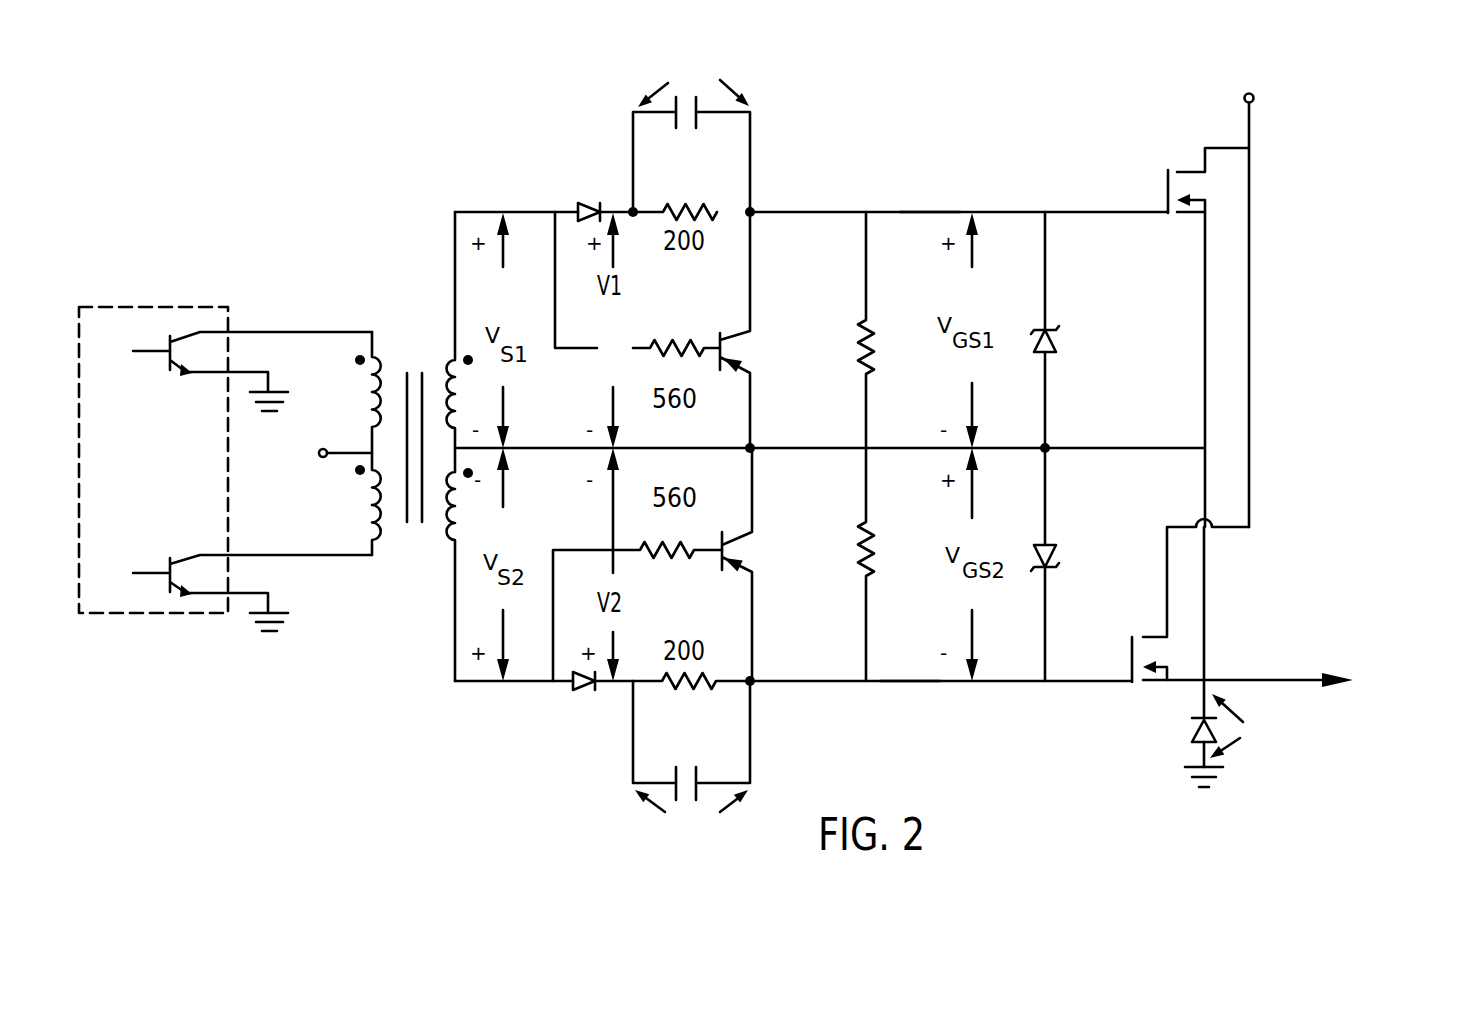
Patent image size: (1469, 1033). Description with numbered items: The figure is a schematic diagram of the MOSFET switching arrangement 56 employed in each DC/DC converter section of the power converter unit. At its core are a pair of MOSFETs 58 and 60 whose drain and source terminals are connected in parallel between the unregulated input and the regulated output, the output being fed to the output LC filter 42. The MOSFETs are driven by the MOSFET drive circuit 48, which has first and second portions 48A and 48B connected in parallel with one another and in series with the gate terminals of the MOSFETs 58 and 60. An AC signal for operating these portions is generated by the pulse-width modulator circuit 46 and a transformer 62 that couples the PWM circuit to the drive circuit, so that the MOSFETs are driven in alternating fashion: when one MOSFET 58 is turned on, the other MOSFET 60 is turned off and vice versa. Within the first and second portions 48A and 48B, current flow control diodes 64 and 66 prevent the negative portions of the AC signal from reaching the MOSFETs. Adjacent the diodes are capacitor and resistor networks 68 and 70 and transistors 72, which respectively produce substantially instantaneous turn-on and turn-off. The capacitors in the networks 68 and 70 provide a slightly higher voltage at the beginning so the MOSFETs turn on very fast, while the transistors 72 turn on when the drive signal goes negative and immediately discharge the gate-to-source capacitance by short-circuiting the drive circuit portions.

The output LC filter 42 is at (1296, 696).
The pulse-width modulator (PWM) circuit 46 is at (137, 616).
The MOSFET drive circuit 48 is at (838, 195).
The first portion of MOSFET drive circuit 48A is at (931, 211).
The second portion of MOSFET drive circuit 48B is at (906, 683).
The MOSFET switching arrangement 56 is at (990, 83).
The MOSFET 58 is at (1227, 189).
The MOSFET 60 is at (1166, 700).
The transformer 62 is at (405, 570).
The current flow control diode 64 is at (576, 207).
The current flow control diode 66 is at (572, 684).
The capacitor and resistor (RC) network 68 is at (752, 130).
The capacitor and resistor (RC) network 70 is at (752, 697).
The transistor 72 is at (741, 316).